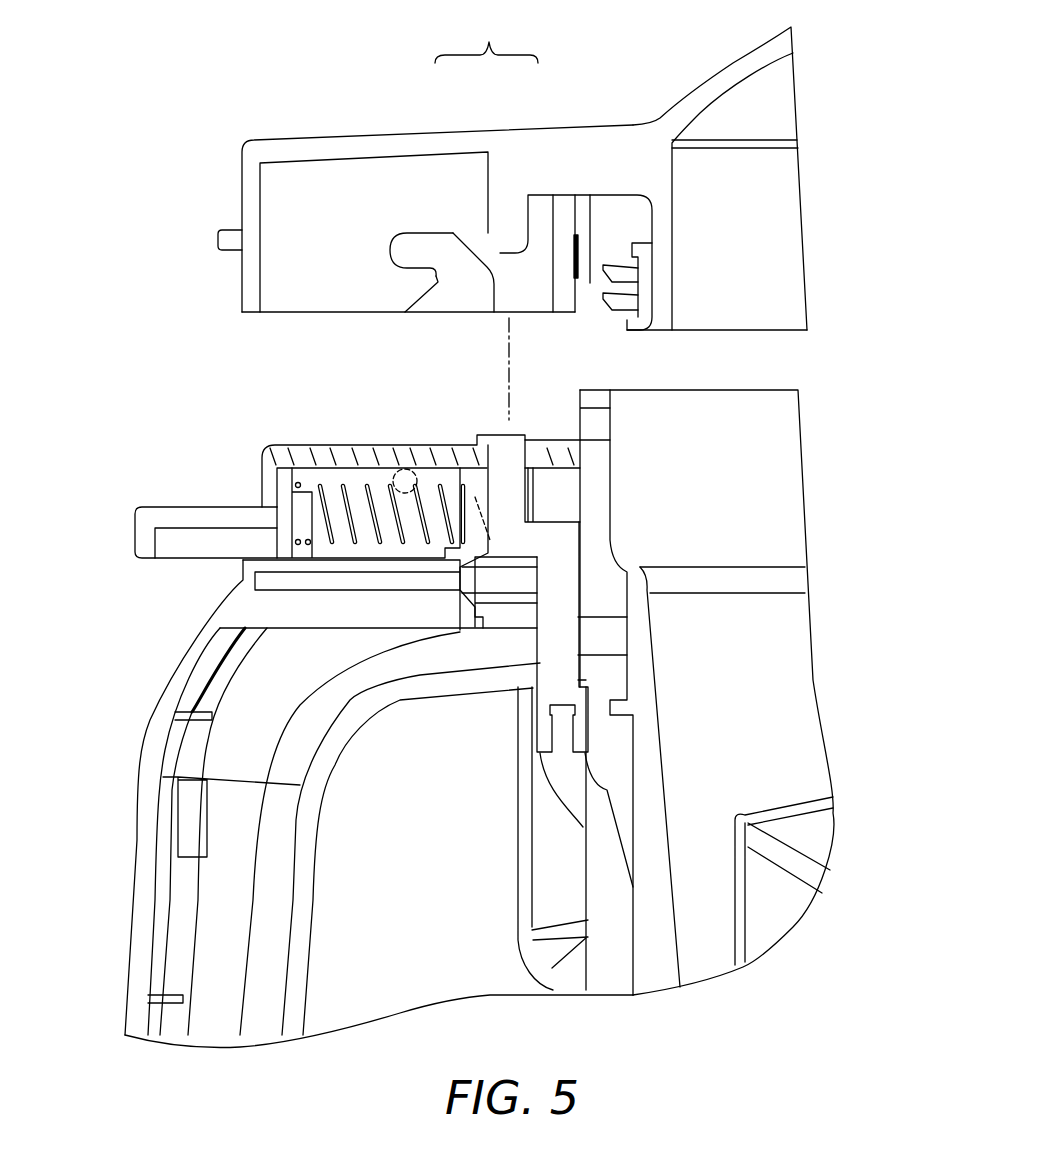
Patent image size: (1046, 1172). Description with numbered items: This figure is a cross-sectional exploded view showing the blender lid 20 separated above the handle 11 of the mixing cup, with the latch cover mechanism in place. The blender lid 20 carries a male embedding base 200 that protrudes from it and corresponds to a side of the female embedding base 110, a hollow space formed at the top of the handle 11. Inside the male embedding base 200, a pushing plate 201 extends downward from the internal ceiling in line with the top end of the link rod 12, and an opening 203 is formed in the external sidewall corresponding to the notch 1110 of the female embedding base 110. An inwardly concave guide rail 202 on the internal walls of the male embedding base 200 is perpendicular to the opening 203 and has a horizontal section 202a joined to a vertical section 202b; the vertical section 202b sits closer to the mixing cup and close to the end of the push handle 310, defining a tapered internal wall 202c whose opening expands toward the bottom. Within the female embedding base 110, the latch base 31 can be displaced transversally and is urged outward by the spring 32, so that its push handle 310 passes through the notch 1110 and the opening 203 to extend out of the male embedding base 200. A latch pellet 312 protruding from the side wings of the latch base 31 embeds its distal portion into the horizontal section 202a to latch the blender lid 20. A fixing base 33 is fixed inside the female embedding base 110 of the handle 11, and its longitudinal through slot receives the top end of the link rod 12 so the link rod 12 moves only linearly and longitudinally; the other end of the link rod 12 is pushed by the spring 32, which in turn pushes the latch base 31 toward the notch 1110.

The blender lid 20 is at (712, 90).
The male embedding base 200 is at (355, 152).
The pushing plate 201 is at (517, 240).
The guide rail 202 is at (478, 160).
The horizontal section 202a is at (407, 252).
The vertical section 202b is at (455, 302).
The tapered internal wall 202c is at (456, 270).
The opening 203 is at (252, 273).
The handle 11 is at (147, 887).
The link rod 12 is at (563, 645).
The female embedding base 110 is at (332, 458).
The notch 1110 is at (263, 543).
The latch base 31 is at (287, 505).
The push handle 310 is at (190, 520).
The latch pellet 312 is at (405, 493).
The spring 32 is at (368, 483).
The fixing base 33 is at (479, 485).